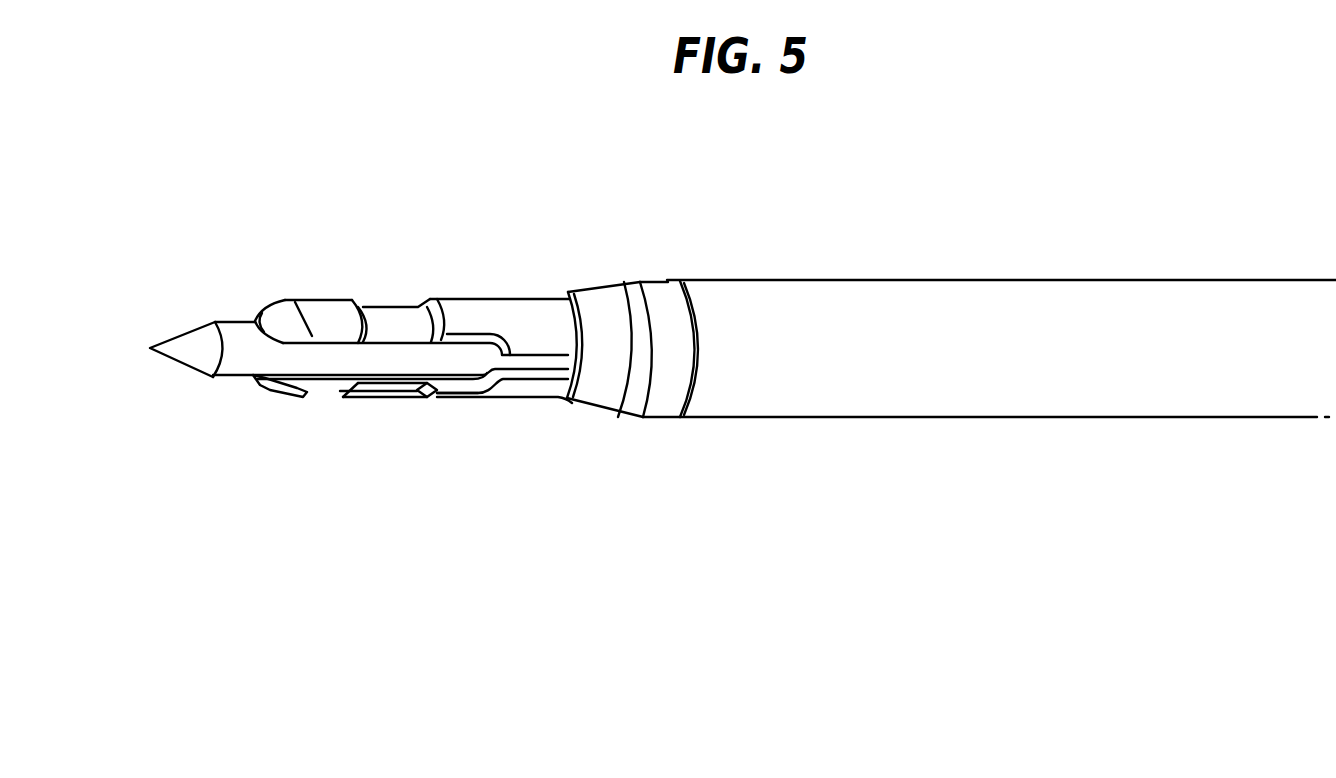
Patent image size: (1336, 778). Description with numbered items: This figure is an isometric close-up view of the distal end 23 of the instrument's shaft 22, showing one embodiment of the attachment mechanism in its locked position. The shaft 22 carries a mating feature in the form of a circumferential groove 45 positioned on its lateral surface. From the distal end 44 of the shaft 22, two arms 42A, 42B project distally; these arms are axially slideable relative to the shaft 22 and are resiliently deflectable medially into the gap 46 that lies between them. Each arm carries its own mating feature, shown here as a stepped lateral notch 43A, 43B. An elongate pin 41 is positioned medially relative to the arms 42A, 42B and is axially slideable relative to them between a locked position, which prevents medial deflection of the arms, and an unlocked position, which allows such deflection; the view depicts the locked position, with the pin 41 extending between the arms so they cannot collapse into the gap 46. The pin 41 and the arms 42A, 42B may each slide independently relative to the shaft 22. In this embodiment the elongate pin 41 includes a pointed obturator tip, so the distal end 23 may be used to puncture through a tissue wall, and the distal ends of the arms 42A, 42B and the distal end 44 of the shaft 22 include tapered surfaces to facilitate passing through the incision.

The distal end 23 is at (306, 110).
The elongate pin 41 is at (150, 347).
The arm 42A is at (282, 300).
The arm 42B is at (273, 395).
The stepped lateral notch 43A is at (385, 307).
The stepped lateral notch 43B is at (390, 392).
The distal end of the shaft 44 is at (585, 292).
The circumferential groove 45 is at (653, 282).
The gap 46 is at (334, 386).
The shaft 22 is at (993, 280).